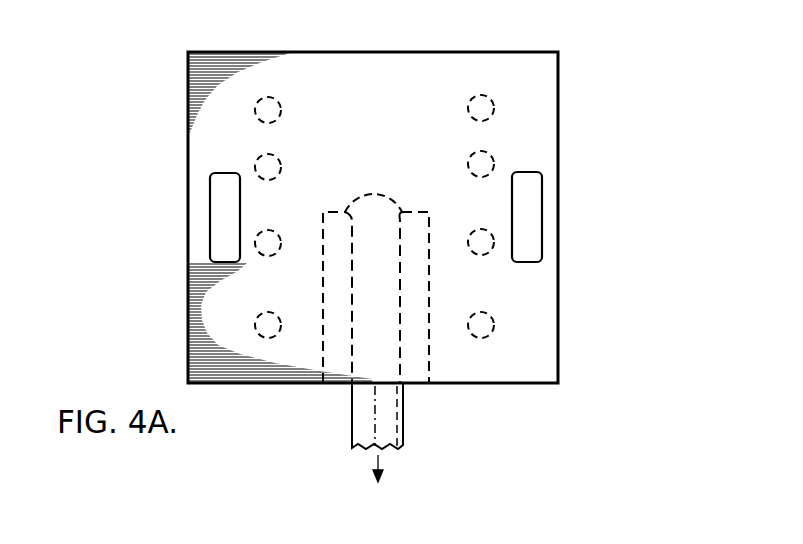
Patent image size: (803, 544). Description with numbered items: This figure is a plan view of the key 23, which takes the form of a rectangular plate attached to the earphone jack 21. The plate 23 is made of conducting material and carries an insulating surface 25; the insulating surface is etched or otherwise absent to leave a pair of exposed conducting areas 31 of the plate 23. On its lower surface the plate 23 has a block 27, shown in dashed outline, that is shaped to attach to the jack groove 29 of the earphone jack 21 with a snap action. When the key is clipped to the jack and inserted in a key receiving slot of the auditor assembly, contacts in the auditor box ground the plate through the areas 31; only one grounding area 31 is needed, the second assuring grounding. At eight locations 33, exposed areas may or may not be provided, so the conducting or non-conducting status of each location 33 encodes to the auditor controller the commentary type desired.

The earphone jack 21 is at (390, 410).
The key 23 is at (593, 242).
The insulating surface 25 is at (543, 101).
The block 27 is at (338, 313).
The jack groove 29 is at (402, 212).
The exposed conducting areas 31 is at (215, 203).
The locations 33 is at (266, 98).